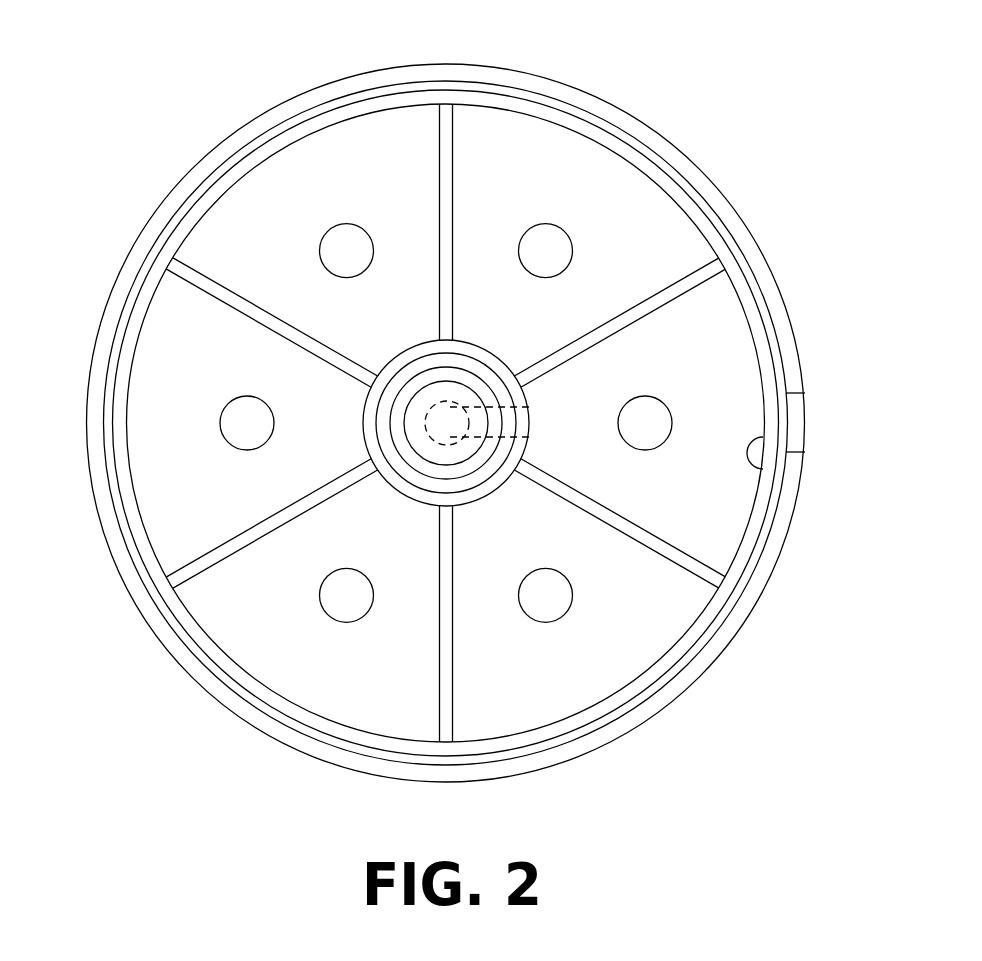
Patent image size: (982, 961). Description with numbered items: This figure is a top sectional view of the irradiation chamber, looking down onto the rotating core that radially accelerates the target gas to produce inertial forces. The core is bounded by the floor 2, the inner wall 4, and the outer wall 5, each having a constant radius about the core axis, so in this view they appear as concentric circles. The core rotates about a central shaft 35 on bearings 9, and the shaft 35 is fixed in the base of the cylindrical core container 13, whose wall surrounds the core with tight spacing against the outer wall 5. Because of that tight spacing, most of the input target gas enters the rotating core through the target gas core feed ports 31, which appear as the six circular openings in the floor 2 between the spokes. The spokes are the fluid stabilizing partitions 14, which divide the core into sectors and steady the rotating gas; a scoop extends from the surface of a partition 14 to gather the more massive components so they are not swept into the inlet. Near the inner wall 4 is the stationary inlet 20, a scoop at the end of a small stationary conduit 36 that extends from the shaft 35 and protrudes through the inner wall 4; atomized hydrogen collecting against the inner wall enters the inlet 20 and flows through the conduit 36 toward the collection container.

The floor 2 is at (628, 210).
The core container 13 is at (162, 210).
The fluid stabilizing partitions 14 is at (453, 172).
The target gas core feed ports 31 is at (665, 398).
The inlet 20 is at (531, 424).
The inner wall 4 is at (491, 496).
The bearings 9 is at (391, 418).
The shaft 35 is at (452, 408).
The conduit 36 is at (440, 412).
The outer wall 5 is at (760, 470).